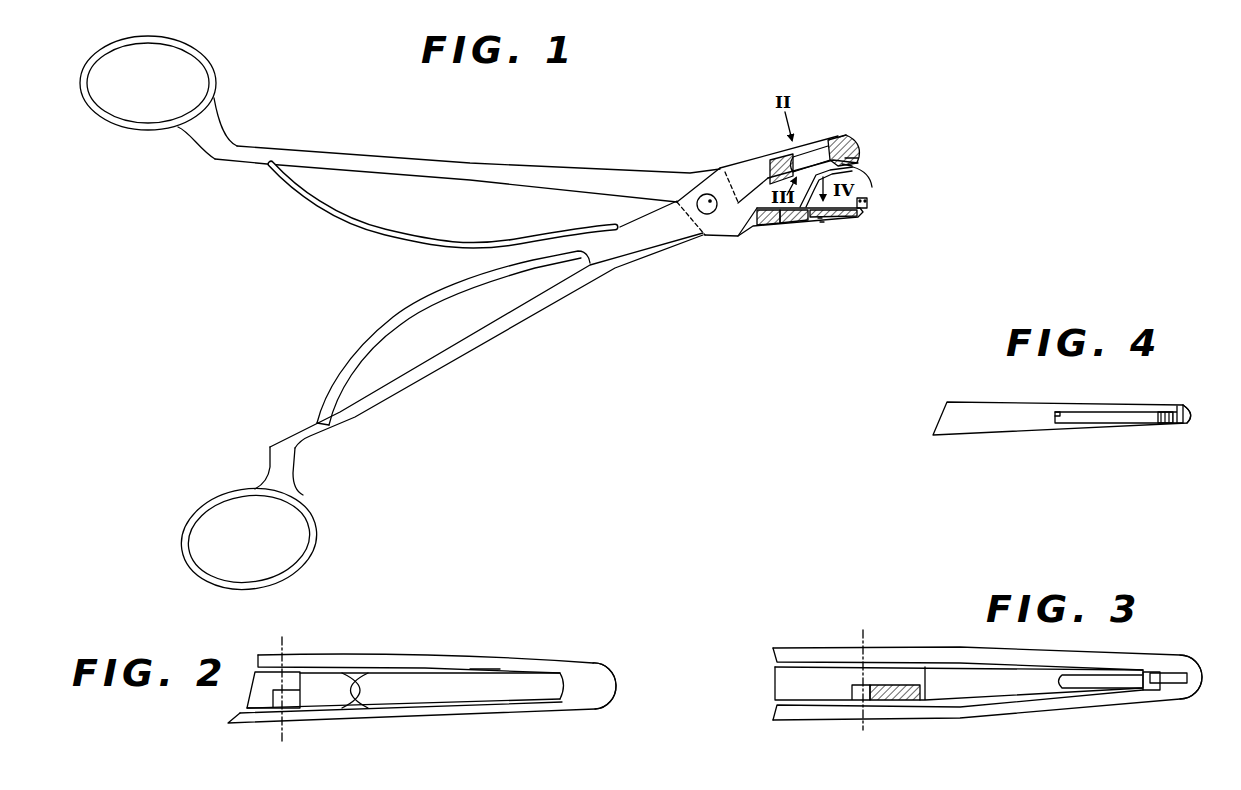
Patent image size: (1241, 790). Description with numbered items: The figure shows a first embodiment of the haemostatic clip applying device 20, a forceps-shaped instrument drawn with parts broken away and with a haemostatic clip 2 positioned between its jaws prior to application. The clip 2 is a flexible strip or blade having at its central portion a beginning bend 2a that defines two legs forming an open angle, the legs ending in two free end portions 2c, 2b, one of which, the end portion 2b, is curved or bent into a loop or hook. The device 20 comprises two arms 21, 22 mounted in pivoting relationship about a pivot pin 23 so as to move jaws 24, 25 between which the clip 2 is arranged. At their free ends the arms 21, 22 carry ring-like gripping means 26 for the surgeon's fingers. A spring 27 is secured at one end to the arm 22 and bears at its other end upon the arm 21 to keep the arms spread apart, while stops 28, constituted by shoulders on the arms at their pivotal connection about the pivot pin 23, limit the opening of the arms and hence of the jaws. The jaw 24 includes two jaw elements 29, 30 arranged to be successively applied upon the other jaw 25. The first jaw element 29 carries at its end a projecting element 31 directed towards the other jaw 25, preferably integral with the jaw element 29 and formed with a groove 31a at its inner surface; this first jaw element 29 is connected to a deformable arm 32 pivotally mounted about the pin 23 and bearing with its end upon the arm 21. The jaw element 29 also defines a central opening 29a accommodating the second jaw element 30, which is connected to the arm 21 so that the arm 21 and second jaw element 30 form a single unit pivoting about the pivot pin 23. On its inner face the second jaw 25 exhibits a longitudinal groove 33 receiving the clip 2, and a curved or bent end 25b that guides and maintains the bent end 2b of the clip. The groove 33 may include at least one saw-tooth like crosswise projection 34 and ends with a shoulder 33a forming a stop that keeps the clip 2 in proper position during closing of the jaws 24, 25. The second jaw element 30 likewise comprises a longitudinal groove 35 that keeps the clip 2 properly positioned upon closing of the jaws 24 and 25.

In FIG. 1, the haemostatic clip 2 is at (865, 181).
In FIG. 1, the beginning bend 2a is at (822, 227).
In FIG. 1, the free end portion 2b is at (822, 220).
In FIG. 1, the free end portion 2c is at (846, 137).
In FIG. 1, the haemostatic clip applying device 20 is at (541, 147).
In FIG. 1, the arm 21 is at (455, 355).
In FIG. 3, the arm 21 is at (787, 673).
In FIG. 1, the arm 22 is at (337, 160).
In FIG. 2, the arm 22 is at (255, 685).
In FIG. 1, the pivot pin 23 is at (703, 203).
In FIG. 1, the jaw 24 is at (874, 140).
In FIG. 2, the jaw 24 is at (600, 719).
In FIG. 3, the jaw 24 is at (1164, 644).
In FIG. 1, the jaw 25 is at (812, 236).
In FIG. 4, the jaw 25 is at (957, 446).
In FIG. 1, the curved or bent end 25b is at (864, 213).
In FIG. 4, the curved or bent end 25b is at (1188, 426).
In FIG. 1, the ring-like gripping means 26 is at (122, 130).
In FIG. 1, the spring 27 is at (378, 226).
In FIG. 1, the stops 28 is at (715, 168).
In FIG. 1, the first jaw element 29 is at (848, 137).
In FIG. 2, the first jaw element 29 is at (594, 670).
In FIG. 3, the first jaw element 29 is at (1188, 660).
In FIG. 2, the central opening 29a is at (482, 668).
In FIG. 1, the second jaw element 30 is at (808, 157).
In FIG. 2, the second jaw element 30 is at (518, 688).
In FIG. 3, the second jaw element 30 is at (980, 687).
In FIG. 1, the projecting element 31 is at (856, 160).
In FIG. 3, the projecting element 31 is at (1184, 682).
In FIG. 1, the groove 31a is at (853, 166).
In FIG. 3, the groove 31a is at (1170, 682).
In FIG. 1, the deformable arm 32 is at (393, 318).
In FIG. 1, the longitudinal groove 33 is at (797, 222).
In FIG. 4, the longitudinal groove 33 is at (1090, 417).
In FIG. 1, the shoulder 33a is at (765, 217).
In FIG. 4, the shoulder 33a is at (1063, 412).
In FIG. 4, the crosswise projection 34 is at (1167, 410).
In FIG. 1, the longitudinal groove 35 is at (792, 162).
In FIG. 3, the longitudinal groove 35 is at (1073, 677).